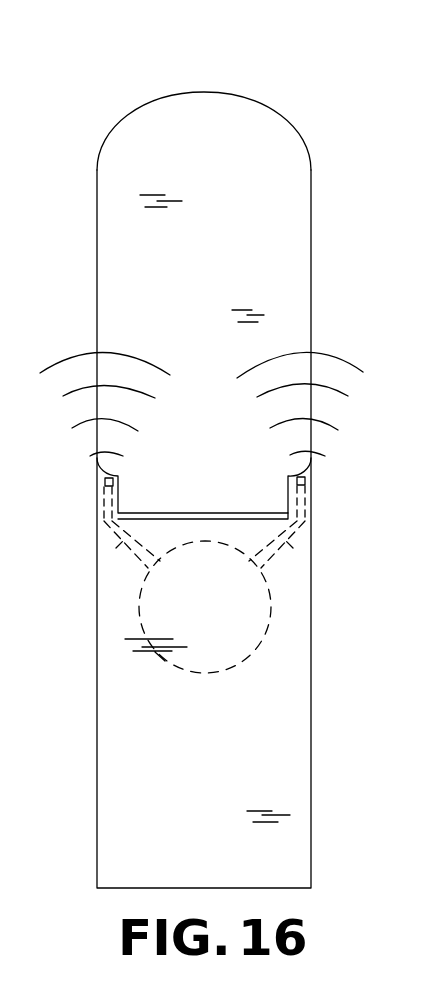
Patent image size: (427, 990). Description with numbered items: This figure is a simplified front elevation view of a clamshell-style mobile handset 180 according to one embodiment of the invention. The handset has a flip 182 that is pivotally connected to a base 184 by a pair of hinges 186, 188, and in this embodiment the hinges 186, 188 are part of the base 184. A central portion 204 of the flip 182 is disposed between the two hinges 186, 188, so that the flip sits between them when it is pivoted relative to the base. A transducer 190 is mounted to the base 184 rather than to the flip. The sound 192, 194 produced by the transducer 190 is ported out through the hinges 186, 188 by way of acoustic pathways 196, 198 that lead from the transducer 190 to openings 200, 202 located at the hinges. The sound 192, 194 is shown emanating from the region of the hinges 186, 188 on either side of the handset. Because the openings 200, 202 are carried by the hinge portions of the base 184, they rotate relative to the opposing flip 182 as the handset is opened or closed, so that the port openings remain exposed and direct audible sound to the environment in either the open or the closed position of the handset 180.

The handset 180 is at (197, 464).
The flip 182 is at (300, 139).
The base 184 is at (96, 841).
The hinge 186 is at (104, 499).
The hinge 188 is at (305, 500).
The transducer 190 is at (245, 655).
The sound 192 is at (70, 362).
The sound 194 is at (336, 362).
The acoustic pathway 196 is at (117, 540).
The acoustic pathway 198 is at (308, 547).
The opening 200 is at (105, 481).
The opening 202 is at (306, 480).
The central portion 204 is at (205, 498).